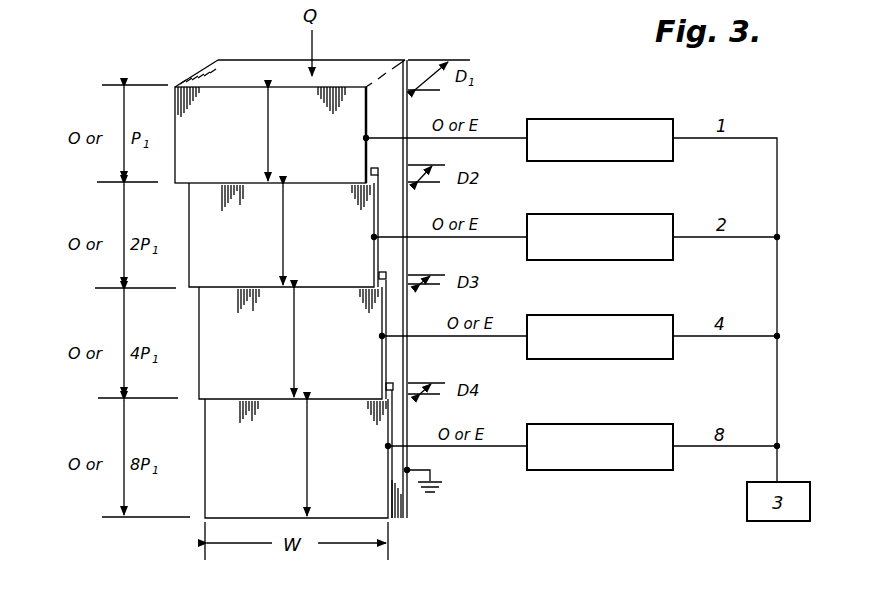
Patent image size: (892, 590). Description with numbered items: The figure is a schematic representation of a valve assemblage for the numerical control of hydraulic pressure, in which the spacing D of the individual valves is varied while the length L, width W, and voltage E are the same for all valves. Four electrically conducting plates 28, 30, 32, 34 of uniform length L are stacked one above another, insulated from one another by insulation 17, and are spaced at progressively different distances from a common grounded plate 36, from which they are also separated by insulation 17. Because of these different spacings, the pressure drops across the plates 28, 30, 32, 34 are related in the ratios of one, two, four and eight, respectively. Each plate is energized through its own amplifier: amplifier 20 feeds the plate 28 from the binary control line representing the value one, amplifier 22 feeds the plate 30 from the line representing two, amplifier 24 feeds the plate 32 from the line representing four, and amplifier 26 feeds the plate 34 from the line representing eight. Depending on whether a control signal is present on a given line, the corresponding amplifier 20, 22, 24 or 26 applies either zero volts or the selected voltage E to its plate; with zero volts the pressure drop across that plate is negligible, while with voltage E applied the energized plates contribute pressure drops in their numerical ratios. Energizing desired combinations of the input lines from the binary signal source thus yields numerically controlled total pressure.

The insulation 17 is at (206, 70).
The amplifier 20 is at (604, 118).
The amplifier 22 is at (596, 214).
The amplifier 24 is at (596, 315).
The amplifier 26 is at (598, 424).
The electrically conducting plate 28 is at (338, 166).
The electrically conducting plate 30 is at (348, 268).
The electrically conducting plate 32 is at (356, 381).
The electrically conducting plate 34 is at (360, 501).
The grounded plate 36 is at (366, 54).